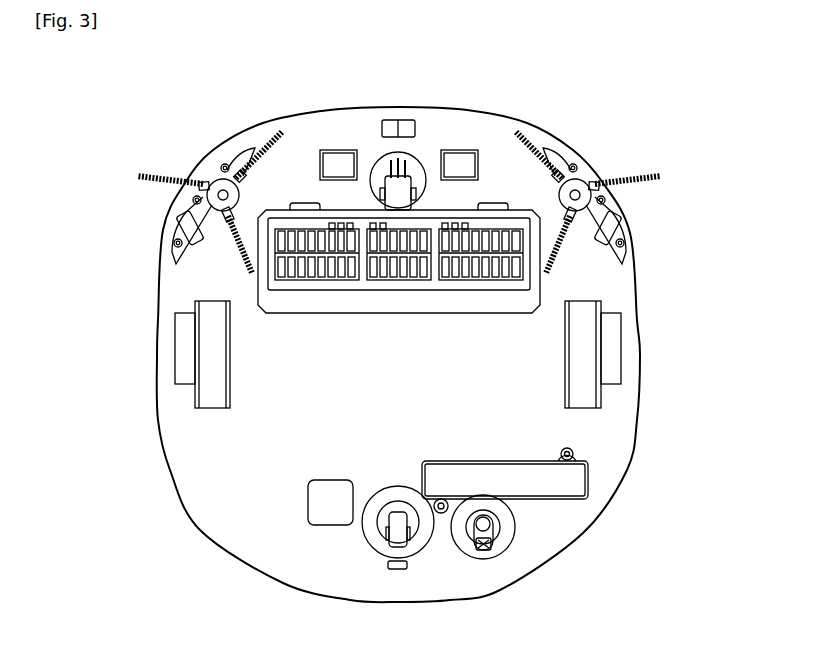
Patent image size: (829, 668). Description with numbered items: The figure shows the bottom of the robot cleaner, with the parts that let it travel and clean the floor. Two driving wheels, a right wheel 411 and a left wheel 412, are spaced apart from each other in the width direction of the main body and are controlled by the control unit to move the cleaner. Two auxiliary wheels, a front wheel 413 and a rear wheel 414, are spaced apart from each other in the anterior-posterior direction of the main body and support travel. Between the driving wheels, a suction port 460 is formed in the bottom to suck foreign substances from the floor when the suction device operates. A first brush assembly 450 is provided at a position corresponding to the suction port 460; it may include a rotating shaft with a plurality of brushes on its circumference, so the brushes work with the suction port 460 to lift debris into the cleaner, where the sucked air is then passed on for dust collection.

The right wheel 411 is at (213, 349).
The left wheel 412 is at (583, 349).
The front wheel 413 is at (402, 188).
The rear wheel 414 is at (397, 535).
The first brush assembly 450 is at (399, 185).
The suction port 460 is at (489, 243).